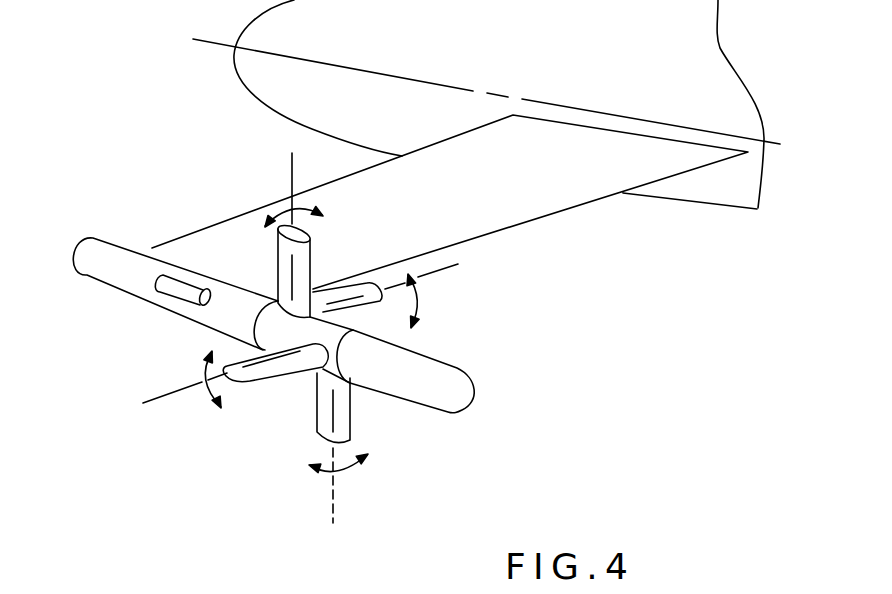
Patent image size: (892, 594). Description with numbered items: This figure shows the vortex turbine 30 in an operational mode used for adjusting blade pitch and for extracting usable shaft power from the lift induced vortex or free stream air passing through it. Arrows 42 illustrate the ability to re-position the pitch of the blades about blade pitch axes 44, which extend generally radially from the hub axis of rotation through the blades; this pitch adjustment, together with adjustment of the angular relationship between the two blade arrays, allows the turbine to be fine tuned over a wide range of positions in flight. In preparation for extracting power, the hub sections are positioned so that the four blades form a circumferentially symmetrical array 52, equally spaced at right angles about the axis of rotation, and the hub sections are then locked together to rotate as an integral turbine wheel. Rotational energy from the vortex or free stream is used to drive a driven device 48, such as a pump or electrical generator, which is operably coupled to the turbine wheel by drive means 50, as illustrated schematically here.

The vortex turbine 30 is at (247, 458).
The arrows 42 is at (277, 212).
The blade pitch axes 44 is at (292, 172).
The driven device 48 is at (150, 268).
The drive means 50 is at (224, 306).
The circumferentially symmetrical array 52 is at (357, 238).